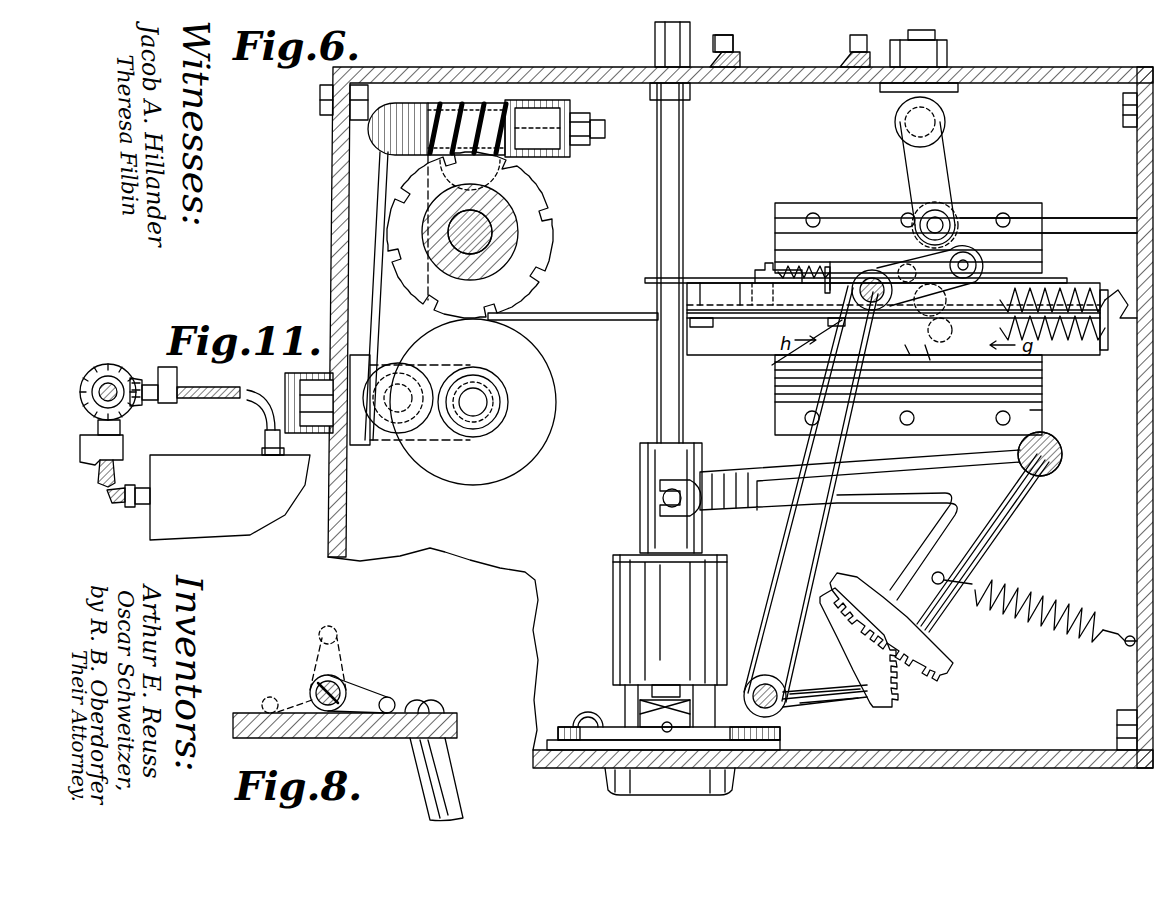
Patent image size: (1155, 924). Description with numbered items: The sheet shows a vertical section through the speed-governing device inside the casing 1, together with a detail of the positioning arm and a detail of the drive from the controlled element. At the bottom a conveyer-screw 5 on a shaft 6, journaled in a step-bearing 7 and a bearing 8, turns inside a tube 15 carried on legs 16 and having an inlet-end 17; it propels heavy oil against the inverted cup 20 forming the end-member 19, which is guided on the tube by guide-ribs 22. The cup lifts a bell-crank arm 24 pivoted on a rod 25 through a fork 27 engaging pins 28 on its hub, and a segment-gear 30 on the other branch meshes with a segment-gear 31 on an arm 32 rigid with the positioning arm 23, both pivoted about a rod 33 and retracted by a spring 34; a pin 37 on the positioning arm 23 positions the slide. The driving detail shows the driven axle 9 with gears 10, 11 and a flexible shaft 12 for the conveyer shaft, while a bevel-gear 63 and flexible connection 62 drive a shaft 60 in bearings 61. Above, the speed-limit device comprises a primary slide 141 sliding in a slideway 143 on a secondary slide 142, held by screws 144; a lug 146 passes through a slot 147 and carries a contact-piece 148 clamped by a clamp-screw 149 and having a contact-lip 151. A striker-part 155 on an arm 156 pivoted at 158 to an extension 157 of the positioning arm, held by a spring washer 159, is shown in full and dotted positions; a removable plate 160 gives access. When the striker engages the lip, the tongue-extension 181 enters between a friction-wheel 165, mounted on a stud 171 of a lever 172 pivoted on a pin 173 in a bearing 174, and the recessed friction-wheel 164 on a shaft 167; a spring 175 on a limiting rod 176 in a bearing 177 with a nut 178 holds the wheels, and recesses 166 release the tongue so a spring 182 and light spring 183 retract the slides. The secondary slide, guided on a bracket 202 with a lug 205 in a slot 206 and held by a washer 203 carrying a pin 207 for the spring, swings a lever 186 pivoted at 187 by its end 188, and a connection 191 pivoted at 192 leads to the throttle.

In FIG. 11, the casing 1 is at (168, 472).
In FIG. 6, the screw 5 is at (655, 688).
In FIG. 6, the shaft 6 is at (660, 385).
In FIG. 11, the shaft 6 is at (268, 450).
In FIG. 6, the step-bearing 7 is at (625, 788).
In FIG. 6, the bearing 8 is at (700, 106).
In FIG. 11, the bearing 8 is at (280, 462).
In FIG. 11, the driven axle 9 is at (108, 383).
In FIG. 11, the gear 10 is at (113, 374).
In FIG. 11, the gear 11 is at (138, 378).
In FIG. 11, the flexible shaft 12 is at (213, 390).
In FIG. 6, the tube 15 is at (640, 692).
In FIG. 6, the legs 16 is at (608, 748).
In FIG. 6, the inlet-end 17 is at (758, 703).
In FIG. 6, the end-member 19 is at (638, 552).
In FIG. 6, the inverted cup 20 is at (625, 615).
In FIG. 6, the guide-ribs 22 is at (640, 700).
In FIG. 6, the positioning arm 23 is at (800, 556).
In FIG. 8, the positioning arm 23 is at (422, 792).
In FIG. 6, the arm 24 is at (1000, 515).
In FIG. 6, the rod 25 is at (1047, 468).
In FIG. 6, the fork 27 is at (722, 486).
In FIG. 6, the pins 28 is at (663, 497).
In FIG. 6, the segment-gear 30 is at (950, 660).
In FIG. 6, the segment-gear 31 is at (885, 709).
In FIG. 6, the arm 32 is at (825, 690).
In FIG. 6, the rod 33 is at (785, 710).
In FIG. 6, the spring 34 is at (1032, 598).
In FIG. 6, the pin 37 is at (872, 268).
In FIG. 8, the pin 37 is at (434, 714).
In FIG. 11, the shaft 60 is at (131, 500).
In FIG. 11, the bearings 61 is at (145, 504).
In FIG. 11, the flexible connection 62 is at (115, 490).
In FIG. 11, the bevel-gear 63 is at (122, 412).
In FIG. 6, the primary slide 141 is at (656, 310).
In FIG. 6, the secondary slide 142 is at (735, 352).
In FIG. 8, the secondary slide 142 is at (243, 738).
In FIG. 6, the slideway 143 is at (762, 310).
In FIG. 6, the screws 144 is at (708, 322).
In FIG. 6, the lug 146 is at (765, 272).
In FIG. 6, the slot 147 is at (748, 290).
In FIG. 6, the contact-piece 148 is at (700, 275).
In FIG. 6, the clamp-screw 149 is at (752, 275).
In FIG. 6, the contact-lip 151 is at (790, 240).
In FIG. 6, the striker-part 155 is at (976, 268).
In FIG. 8, the striker-part 155 is at (338, 640).
In FIG. 6, the arm 156 is at (880, 255).
In FIG. 8, the arm 156 is at (315, 656).
In FIG. 6, the extension 157 is at (912, 315).
In FIG. 8, the extension 157 is at (419, 705).
In FIG. 6, the pivot 158 is at (990, 258).
In FIG. 8, the pivot 158 is at (325, 710).
In FIG. 8, the spring washer 159 is at (318, 705).
In FIG. 6, the removable plate 160 is at (765, 70).
In FIG. 6, the friction-wheel 164 is at (540, 202).
In FIG. 6, the friction-wheel 165 is at (535, 366).
In FIG. 6, the recesses 166 is at (553, 222).
In FIG. 6, the shaft 167 is at (492, 240).
In FIG. 6, the stud 171 is at (490, 405).
In FIG. 6, the lever 172 is at (376, 300).
In FIG. 6, the pin 173 is at (372, 438).
In FIG. 6, the bearing 174 is at (358, 462).
In FIG. 6, the spring 175 is at (470, 100).
In FIG. 6, the limiting rod 176 is at (603, 128).
In FIG. 6, the bearing 177 is at (545, 97).
In FIG. 6, the nut 178 is at (598, 115).
In FIG. 6, the tongue-extension 181 is at (537, 318).
In FIG. 6, the spring 182 is at (1075, 335).
In FIG. 6, the light spring 183 is at (825, 258).
In FIG. 6, the lever 186 is at (935, 170).
In FIG. 6, the pivot 187 is at (925, 122).
In FIG. 6, the end 188 is at (1030, 390).
In FIG. 6, the connection 191 is at (1003, 230).
In FIG. 6, the pivot 192 is at (940, 224).
In FIG. 6, the bracket 202 is at (1033, 412).
In FIG. 6, the washer 203 is at (925, 345).
In FIG. 6, the lug 205 is at (908, 355).
In FIG. 6, the slot 206 is at (791, 348).
In FIG. 6, the pin 207 is at (1003, 298).